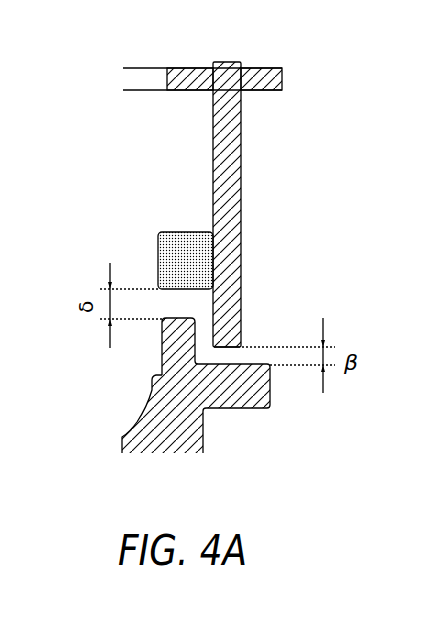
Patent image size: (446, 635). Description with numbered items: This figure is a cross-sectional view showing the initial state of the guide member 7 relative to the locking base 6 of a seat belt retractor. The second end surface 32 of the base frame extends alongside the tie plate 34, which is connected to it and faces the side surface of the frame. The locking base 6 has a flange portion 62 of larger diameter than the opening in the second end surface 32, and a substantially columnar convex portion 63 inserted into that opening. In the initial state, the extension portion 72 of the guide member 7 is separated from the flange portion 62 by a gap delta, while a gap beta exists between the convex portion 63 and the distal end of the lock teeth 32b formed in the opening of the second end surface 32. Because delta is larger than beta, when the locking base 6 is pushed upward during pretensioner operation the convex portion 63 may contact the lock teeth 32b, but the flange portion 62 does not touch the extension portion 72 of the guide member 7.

The tie plate 34 is at (183, 68).
The second end surface 32 is at (241, 256).
The lock teeth 32b is at (231, 349).
The extension portion 72 is at (185, 260).
The guide member 7 is at (158, 262).
The locking base 6 is at (97, 392).
The flange portion 62 is at (162, 340).
The convex portion 63 is at (271, 386).